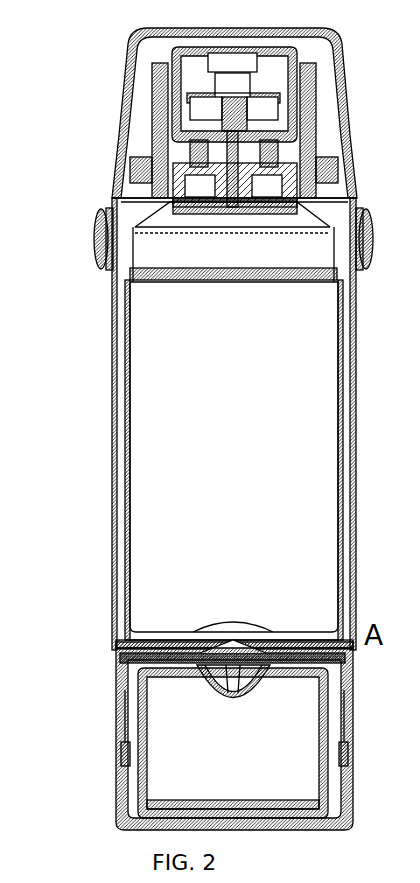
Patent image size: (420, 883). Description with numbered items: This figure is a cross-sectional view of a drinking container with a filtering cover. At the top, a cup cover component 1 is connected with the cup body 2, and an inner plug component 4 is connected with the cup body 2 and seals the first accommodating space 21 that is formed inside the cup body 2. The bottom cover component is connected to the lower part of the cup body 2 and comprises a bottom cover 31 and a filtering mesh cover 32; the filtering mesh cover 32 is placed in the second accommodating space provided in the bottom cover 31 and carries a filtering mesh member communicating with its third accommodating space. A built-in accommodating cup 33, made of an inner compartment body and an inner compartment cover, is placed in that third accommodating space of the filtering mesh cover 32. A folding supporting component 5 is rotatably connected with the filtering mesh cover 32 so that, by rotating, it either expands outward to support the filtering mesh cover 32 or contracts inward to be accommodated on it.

The cup cover component 1 is at (195, 146).
The inner plug component 4 is at (157, 130).
The cup body 2 is at (187, 424).
The first accommodating space 21 is at (180, 460).
The bottom cover 31 is at (185, 643).
The filtering mesh cover 32 is at (185, 739).
The built-in accommodating cup 33 is at (183, 728).
The folding supporting component 5 is at (173, 743).